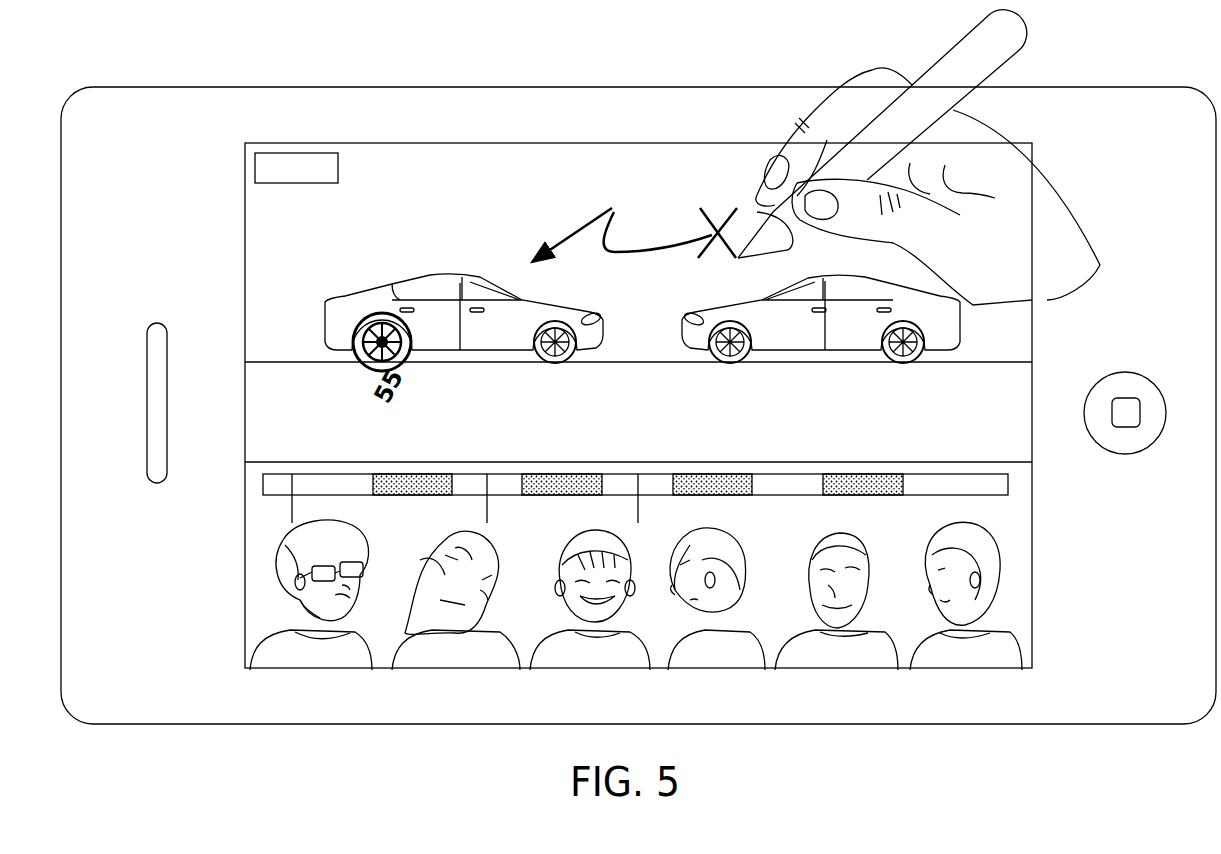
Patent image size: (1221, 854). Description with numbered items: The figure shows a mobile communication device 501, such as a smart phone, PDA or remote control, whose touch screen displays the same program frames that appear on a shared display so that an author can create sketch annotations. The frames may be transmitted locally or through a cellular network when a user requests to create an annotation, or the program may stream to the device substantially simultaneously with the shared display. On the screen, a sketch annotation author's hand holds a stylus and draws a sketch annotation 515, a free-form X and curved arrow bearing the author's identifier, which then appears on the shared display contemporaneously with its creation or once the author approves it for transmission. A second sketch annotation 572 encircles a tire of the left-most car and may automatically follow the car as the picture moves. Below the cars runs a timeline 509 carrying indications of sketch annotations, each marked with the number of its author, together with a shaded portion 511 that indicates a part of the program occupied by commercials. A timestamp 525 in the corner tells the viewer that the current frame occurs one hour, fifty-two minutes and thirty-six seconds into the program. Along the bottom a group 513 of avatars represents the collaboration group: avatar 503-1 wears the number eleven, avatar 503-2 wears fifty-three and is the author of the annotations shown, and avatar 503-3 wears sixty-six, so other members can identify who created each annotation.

The mobile communication device 501 is at (628, 87).
The avatar 503-1 is at (278, 658).
The avatar 503-2 is at (565, 658).
The avatar 503-3 is at (808, 658).
The timeline 509 is at (950, 456).
The shaded portion of timeline 511 is at (487, 474).
The group 513 is at (608, 588).
The sketch annotation 515 is at (586, 226).
The timestamp 525 is at (338, 165).
The sketch annotation 572 is at (358, 310).